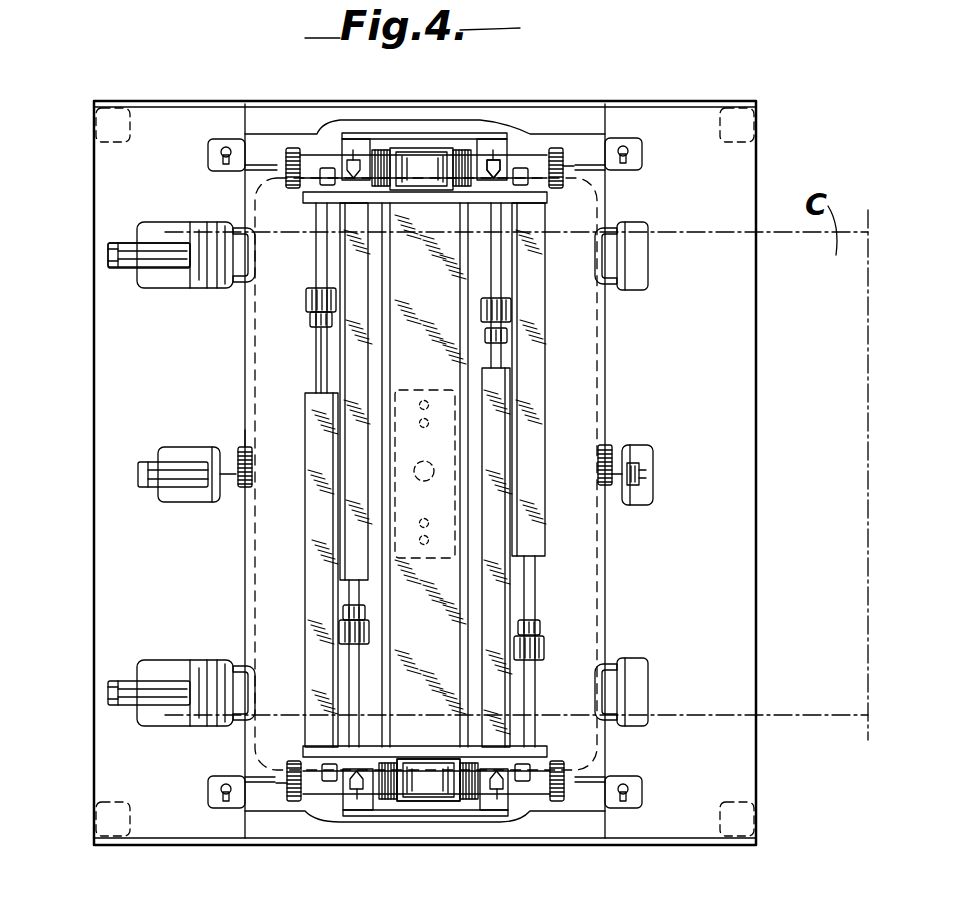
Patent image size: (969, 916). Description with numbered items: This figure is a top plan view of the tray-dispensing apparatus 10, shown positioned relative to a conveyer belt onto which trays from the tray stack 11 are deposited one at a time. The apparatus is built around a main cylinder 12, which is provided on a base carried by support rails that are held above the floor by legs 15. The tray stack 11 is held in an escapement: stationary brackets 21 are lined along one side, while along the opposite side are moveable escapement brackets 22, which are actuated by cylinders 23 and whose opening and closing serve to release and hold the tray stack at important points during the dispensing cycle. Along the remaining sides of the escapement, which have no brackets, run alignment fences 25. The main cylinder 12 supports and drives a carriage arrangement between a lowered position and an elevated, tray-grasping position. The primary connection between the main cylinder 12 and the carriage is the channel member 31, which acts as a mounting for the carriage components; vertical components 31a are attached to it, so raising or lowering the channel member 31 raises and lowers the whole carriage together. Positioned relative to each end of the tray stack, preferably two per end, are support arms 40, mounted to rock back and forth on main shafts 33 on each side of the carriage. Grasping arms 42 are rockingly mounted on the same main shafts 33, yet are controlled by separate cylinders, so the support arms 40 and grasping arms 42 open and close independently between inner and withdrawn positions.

The apparatus 10 is at (80, 108).
The tray stack 11 is at (597, 356).
The main cylinder 12 is at (470, 553).
The legs 15 is at (756, 812).
The stationary brackets 21 is at (620, 262).
The moveable escapement brackets 22 is at (220, 250).
The cylinders 23 is at (140, 256).
The alignment fences 25 is at (590, 165).
The channel member 31 is at (445, 290).
The vertical components 31a is at (416, 785).
The main shafts 33 is at (375, 780).
The support arms 40 is at (520, 172).
The grasping arms 42 is at (488, 162).